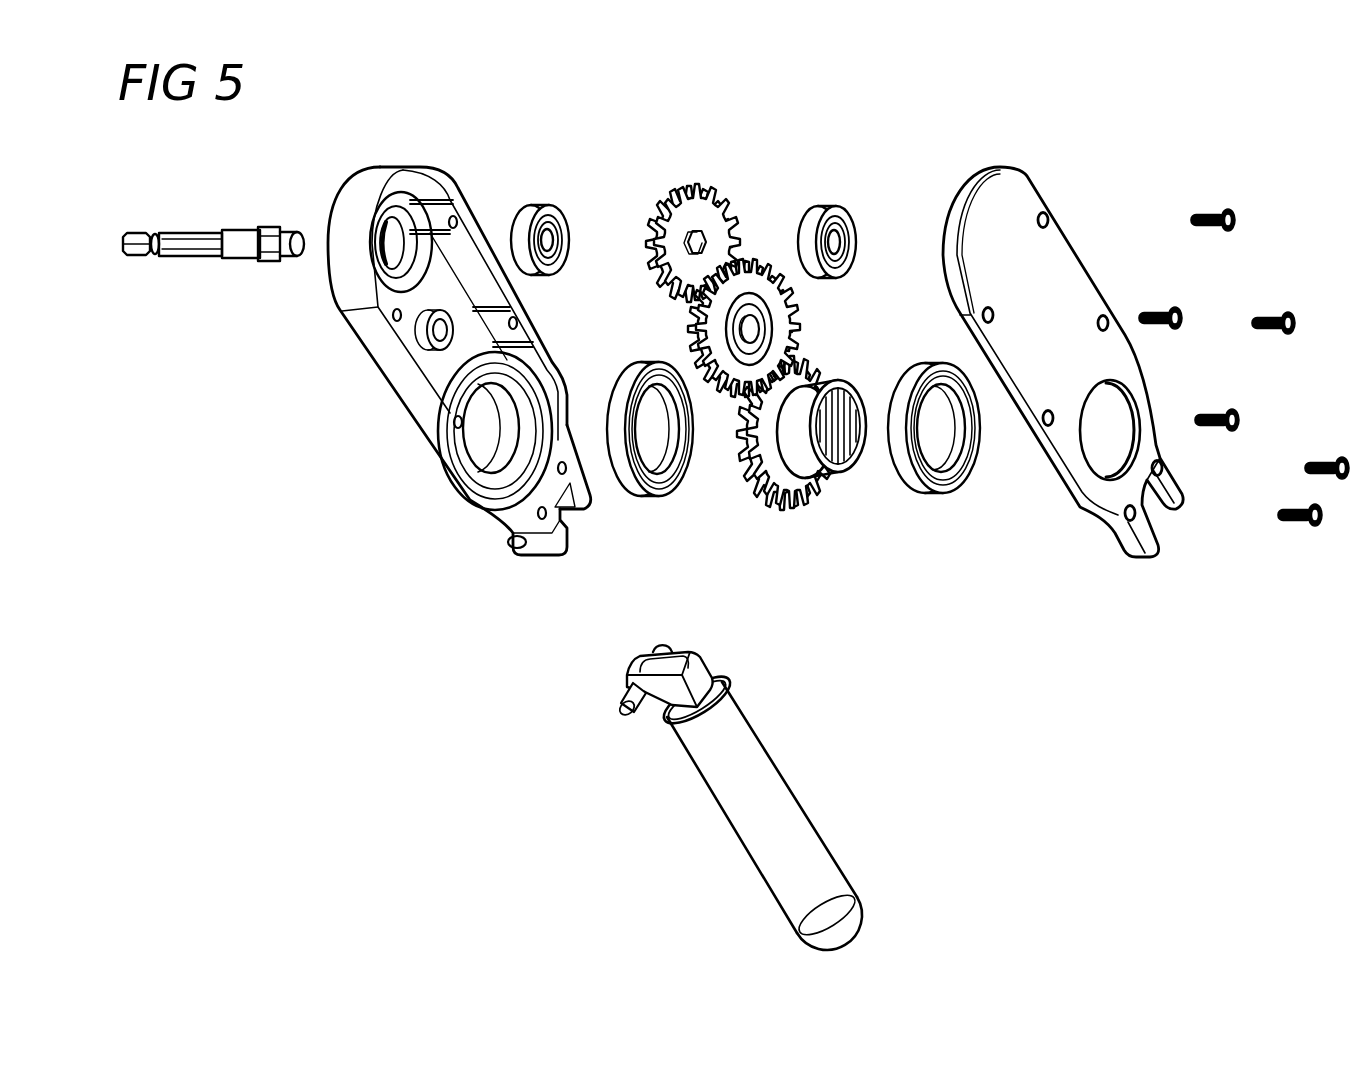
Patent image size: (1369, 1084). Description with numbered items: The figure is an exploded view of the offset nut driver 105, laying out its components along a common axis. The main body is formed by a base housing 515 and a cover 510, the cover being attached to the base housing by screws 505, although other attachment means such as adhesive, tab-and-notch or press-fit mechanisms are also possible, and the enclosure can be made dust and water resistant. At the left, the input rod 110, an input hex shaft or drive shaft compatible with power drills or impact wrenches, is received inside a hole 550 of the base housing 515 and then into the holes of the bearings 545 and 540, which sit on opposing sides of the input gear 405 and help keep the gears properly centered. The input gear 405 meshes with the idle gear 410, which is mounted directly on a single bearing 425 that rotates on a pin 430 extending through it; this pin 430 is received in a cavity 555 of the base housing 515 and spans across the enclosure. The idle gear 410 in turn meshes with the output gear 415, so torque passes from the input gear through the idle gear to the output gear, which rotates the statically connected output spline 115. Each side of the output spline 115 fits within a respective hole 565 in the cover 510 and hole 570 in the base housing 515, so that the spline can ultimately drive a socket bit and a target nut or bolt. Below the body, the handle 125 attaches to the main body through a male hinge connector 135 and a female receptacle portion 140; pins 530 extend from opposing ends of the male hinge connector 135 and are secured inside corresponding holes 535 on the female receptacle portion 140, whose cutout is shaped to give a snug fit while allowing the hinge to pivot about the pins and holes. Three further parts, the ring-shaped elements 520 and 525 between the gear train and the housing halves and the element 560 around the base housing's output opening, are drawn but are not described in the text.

The offset nut driver 105 is at (777, 70).
The input rod 110 is at (122, 246).
The output spline 115 is at (800, 445).
The handle 125 is at (764, 737).
The male hinge connector 135 is at (628, 700).
The female receptacle portion 140 is at (563, 558).
The input gear 405 is at (716, 186).
The idle gear 410 is at (731, 328).
The output gear 415 is at (816, 461).
The bearing 425 is at (740, 338).
The pin 430 is at (748, 329).
The screws 505 is at (1242, 421).
The cover 510 is at (1063, 372).
The base housing 515 is at (413, 355).
The seal 520 is at (935, 493).
The seal 525 is at (648, 495).
The pins 530 is at (622, 703).
The holes 535 is at (513, 543).
The bearing 540 is at (840, 206).
The bearing 545 is at (548, 207).
The hole 550 is at (380, 243).
The cavity 555 is at (438, 330).
The bore boss 560 is at (495, 462).
The hole 565 is at (1112, 437).
The hole 570 is at (488, 422).